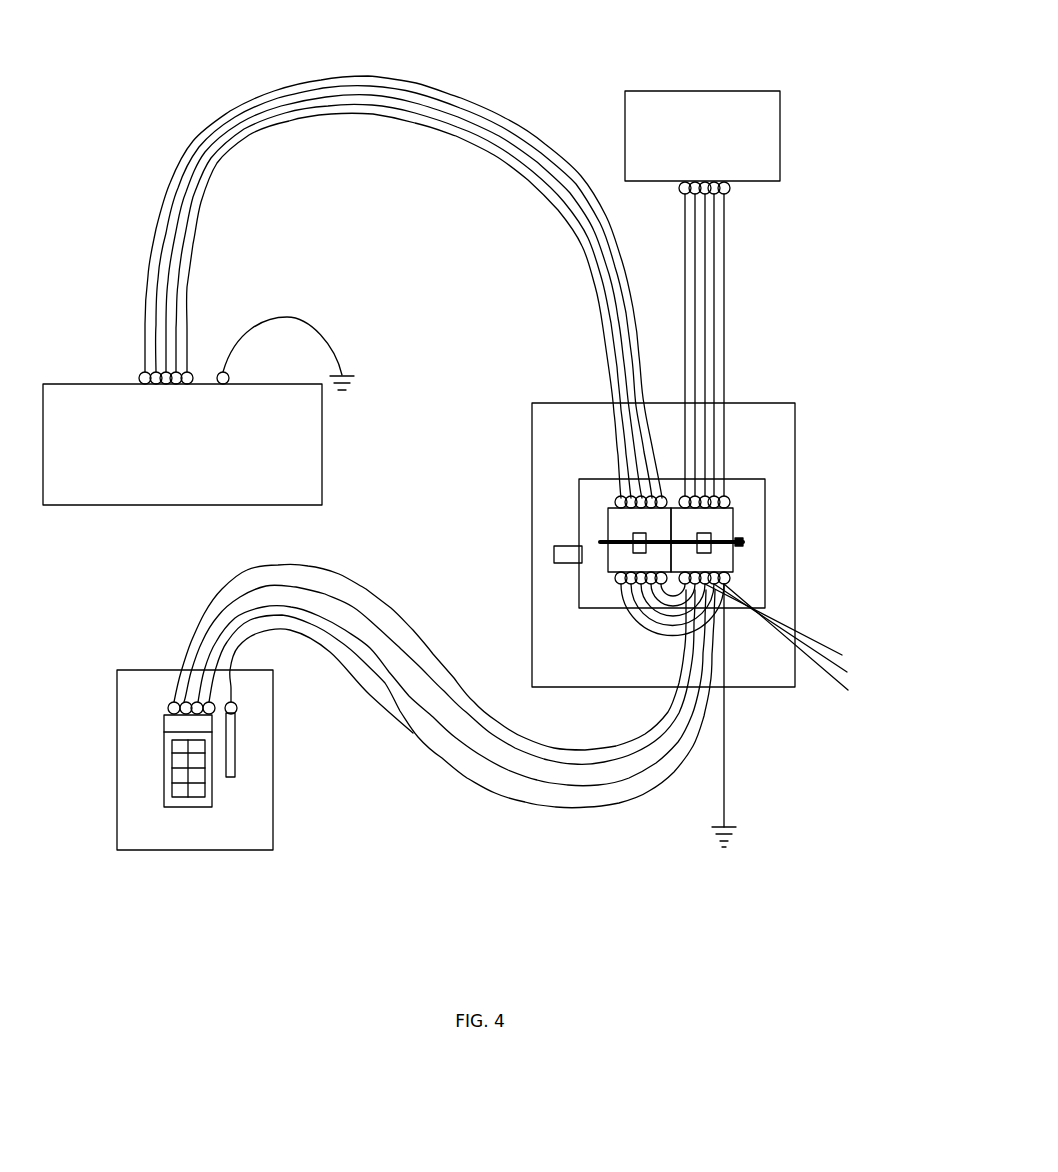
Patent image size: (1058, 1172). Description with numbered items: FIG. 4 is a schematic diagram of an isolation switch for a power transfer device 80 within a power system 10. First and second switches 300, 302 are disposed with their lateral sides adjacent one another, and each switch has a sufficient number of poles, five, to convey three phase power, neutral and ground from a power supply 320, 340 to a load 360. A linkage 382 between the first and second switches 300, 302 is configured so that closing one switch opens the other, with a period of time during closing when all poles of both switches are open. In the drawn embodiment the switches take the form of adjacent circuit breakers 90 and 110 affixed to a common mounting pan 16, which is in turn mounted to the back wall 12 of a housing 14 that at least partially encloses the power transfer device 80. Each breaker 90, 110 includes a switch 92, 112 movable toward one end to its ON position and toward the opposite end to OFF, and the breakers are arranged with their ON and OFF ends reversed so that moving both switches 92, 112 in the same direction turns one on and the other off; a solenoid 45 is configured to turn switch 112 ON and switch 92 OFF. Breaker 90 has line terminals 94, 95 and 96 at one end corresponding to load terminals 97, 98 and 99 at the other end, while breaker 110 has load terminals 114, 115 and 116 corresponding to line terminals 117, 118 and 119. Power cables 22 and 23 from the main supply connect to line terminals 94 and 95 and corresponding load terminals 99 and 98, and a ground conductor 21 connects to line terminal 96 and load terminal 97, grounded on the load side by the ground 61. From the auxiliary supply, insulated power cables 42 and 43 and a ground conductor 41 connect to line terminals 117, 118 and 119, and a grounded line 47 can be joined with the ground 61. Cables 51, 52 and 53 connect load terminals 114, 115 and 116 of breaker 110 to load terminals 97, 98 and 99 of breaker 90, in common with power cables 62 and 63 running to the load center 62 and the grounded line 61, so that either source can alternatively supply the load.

The power system 10 is at (560, 890).
The back wall 12 is at (780, 427).
The housing 14 is at (797, 450).
The common mounting pan 16 is at (748, 507).
The ground conductor 21 is at (725, 250).
The power cable 22 is at (705, 282).
The power cable 23 is at (686, 312).
The ground conductor 41 is at (407, 118).
The insulated power cable 42 is at (385, 93).
The insulated power cable 43 is at (360, 75).
The solenoid 45 is at (563, 545).
The grounded line 47 is at (305, 322).
The cable 51 is at (665, 590).
The cable 52 is at (655, 590).
The cable 53 is at (645, 590).
The ground 61 is at (724, 763).
The load center 62 is at (695, 727).
The power cable 63 is at (673, 695).
The power transfer device 80 is at (823, 705).
The circuit breaker 90 is at (727, 562).
The switch 92 is at (710, 547).
The line terminal 94 is at (683, 500).
The line terminal 95 is at (703, 500).
The line terminal 96 is at (713, 500).
The load terminal 97 is at (783, 626).
The load terminal 98 is at (791, 634).
The load terminal 99 is at (796, 643).
The circuit breaker 110 is at (618, 553).
The switch 112 is at (633, 532).
The load terminal 114 is at (621, 585).
The load terminal 115 is at (631, 585).
The load terminal 116 is at (641, 585).
The line terminal 117 is at (643, 497).
The line terminal 118 is at (632, 497).
The line terminal 119 is at (620, 497).
The first switch 300 is at (627, 562).
The second switch 302 is at (725, 527).
The power supply 320 is at (702, 142).
The power supply 340 is at (182, 438).
The load 360 is at (182, 763).
The linkage 382 is at (600, 538).